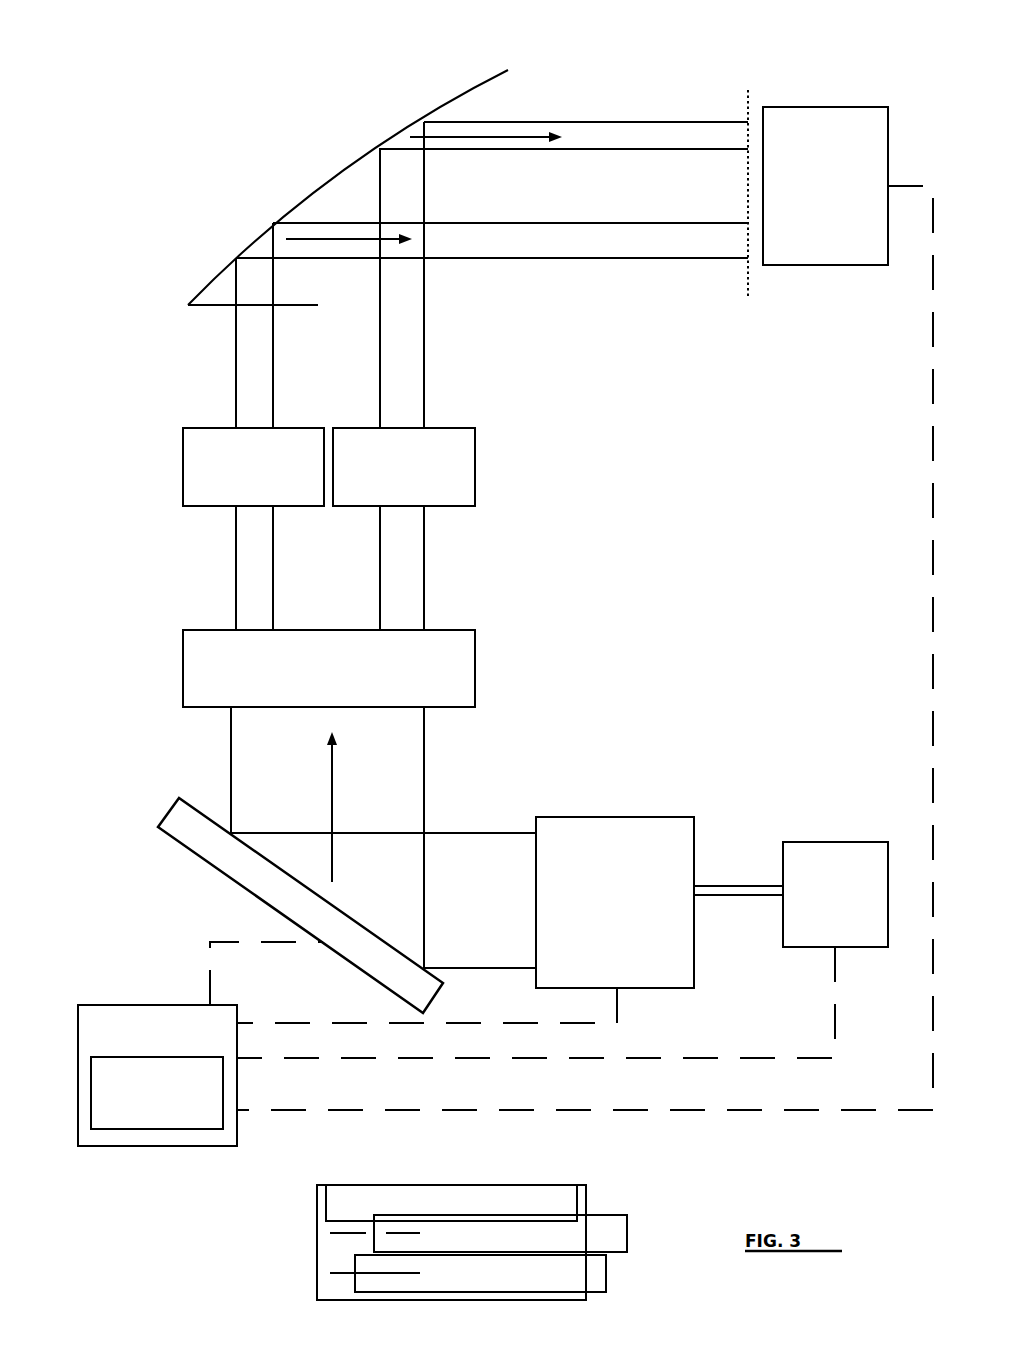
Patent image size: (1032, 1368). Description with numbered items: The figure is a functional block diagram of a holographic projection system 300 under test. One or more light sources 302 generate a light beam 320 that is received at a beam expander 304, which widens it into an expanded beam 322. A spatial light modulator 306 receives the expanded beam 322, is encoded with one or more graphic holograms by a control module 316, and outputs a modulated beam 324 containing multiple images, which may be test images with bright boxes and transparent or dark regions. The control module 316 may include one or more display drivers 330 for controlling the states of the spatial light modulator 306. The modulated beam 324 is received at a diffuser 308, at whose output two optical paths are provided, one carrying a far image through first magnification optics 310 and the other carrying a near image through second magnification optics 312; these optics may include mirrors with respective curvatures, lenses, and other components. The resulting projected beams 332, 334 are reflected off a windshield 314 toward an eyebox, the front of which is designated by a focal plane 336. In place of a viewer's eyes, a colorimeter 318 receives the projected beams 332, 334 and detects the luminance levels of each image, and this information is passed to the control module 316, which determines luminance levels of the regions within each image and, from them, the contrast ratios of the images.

The holographic projection system 300 is at (190, 38).
The light sources 302 is at (835, 842).
The beam expander 304 is at (617, 817).
The spatial light modulator 306 is at (225, 873).
The diffuser 308 is at (183, 652).
The first magnification optics 310 is at (475, 450).
The second magnification optics 312 is at (183, 445).
The windshield 314 is at (307, 193).
The control module 316 is at (105, 1005).
The colorimeter 318 is at (862, 107).
The light beam 320 is at (722, 886).
The expanded beam 322 is at (455, 833).
The modulated beam 324 is at (231, 750).
The display drivers 330 is at (91, 1068).
The projected beam 332 is at (424, 340).
The projected beam 334 is at (236, 358).
The focal plane 336 is at (748, 90).